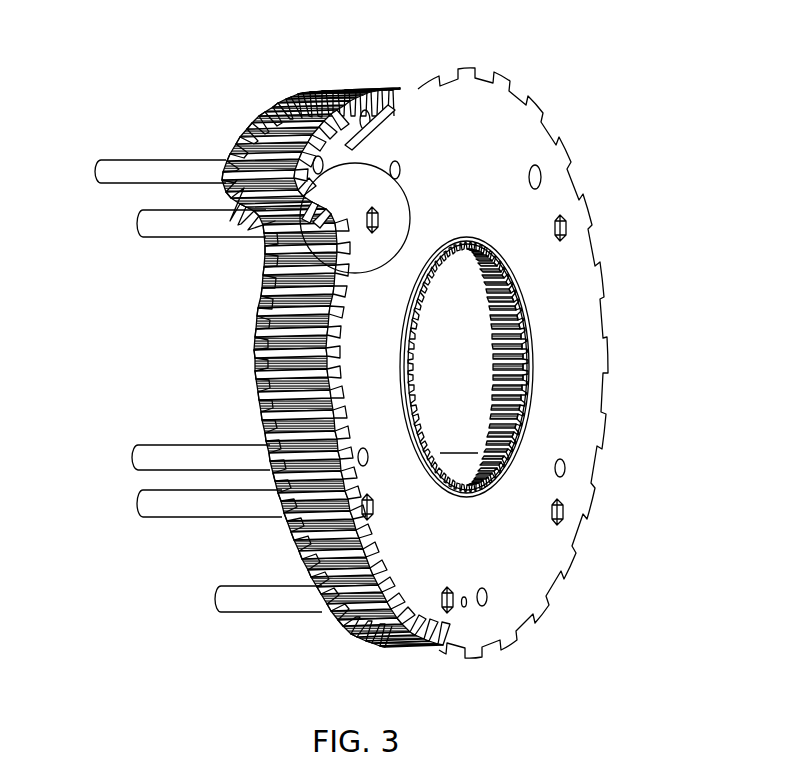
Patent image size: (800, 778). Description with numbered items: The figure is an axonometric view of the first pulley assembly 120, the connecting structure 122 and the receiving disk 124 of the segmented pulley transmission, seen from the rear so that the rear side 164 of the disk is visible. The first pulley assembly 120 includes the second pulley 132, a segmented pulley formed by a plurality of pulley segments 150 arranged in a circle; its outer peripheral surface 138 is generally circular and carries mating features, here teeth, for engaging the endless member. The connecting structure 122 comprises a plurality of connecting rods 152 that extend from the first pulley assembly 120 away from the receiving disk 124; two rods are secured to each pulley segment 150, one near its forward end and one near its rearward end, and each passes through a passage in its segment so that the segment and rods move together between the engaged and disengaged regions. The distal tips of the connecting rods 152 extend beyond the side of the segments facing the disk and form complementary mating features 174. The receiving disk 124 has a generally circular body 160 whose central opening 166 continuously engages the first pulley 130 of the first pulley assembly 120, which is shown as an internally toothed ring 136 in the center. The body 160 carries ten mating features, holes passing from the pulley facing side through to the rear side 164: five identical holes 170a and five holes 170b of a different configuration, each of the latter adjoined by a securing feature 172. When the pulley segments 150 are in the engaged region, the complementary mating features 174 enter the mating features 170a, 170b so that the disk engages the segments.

The first pulley assembly 120 is at (362, 52).
The connecting structure 122 is at (187, 553).
The receiving disk 124 is at (690, 231).
The first pulley 130 is at (550, 328).
The second pulley 132 is at (233, 340).
The internal teeth 136 is at (502, 386).
The outer peripheral surface 138 is at (265, 390).
The pulley segments 150 is at (340, 118).
The connecting rods 152 is at (163, 228).
The body 160 is at (465, 50).
The rear side 164 is at (513, 130).
The central opening 166 is at (527, 402).
The mating features 170a is at (398, 172).
The mating features 170b is at (378, 220).
The securing features 172 is at (360, 230).
The complementary mating features 174 is at (318, 165).